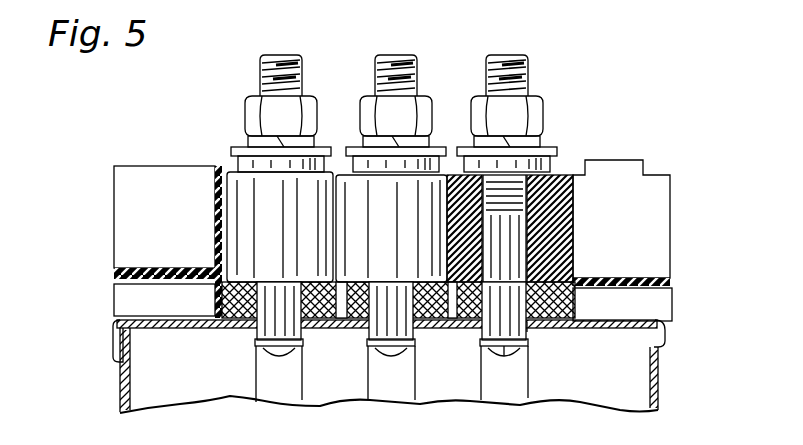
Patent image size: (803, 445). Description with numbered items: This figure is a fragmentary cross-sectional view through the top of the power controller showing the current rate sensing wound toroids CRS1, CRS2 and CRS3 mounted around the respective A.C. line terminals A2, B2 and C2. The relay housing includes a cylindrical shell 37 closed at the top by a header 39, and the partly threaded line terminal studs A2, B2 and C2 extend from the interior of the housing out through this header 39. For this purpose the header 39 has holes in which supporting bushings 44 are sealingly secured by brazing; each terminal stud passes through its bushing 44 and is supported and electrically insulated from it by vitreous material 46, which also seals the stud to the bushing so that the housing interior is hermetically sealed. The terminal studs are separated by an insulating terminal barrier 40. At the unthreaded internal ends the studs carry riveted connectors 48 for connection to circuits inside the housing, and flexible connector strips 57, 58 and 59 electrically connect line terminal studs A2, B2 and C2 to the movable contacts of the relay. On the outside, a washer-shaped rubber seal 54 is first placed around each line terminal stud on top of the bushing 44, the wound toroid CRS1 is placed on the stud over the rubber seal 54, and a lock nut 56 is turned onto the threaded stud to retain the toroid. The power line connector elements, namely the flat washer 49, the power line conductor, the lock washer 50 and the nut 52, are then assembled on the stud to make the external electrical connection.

The cylindrical shell 37 is at (121, 386).
The header 39 is at (115, 339).
The insulating terminal barrier 40 is at (128, 213).
The supporting bushing 44 is at (548, 303).
The vitreous material 46 is at (530, 334).
The riveted connector 48 is at (504, 358).
The flat washer 49 is at (548, 158).
The lock washer 50 is at (540, 143).
The nut 52 is at (533, 108).
The rubber seal 54 is at (572, 281).
The lock nut 56 is at (550, 168).
The flexible connector strip 57 is at (485, 379).
The flexible connector strip 58 is at (379, 379).
The flexible connector strip 59 is at (268, 379).
The line terminal A2 is at (543, 97).
The line terminal B2 is at (398, 62).
The line terminal C2 is at (283, 62).
The wound toroid CRS1 is at (558, 223).
The wound toroid CRS2 is at (437, 186).
The wound toroid CRS3 is at (318, 190).